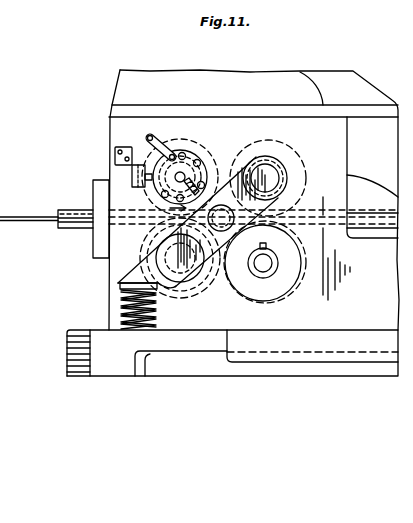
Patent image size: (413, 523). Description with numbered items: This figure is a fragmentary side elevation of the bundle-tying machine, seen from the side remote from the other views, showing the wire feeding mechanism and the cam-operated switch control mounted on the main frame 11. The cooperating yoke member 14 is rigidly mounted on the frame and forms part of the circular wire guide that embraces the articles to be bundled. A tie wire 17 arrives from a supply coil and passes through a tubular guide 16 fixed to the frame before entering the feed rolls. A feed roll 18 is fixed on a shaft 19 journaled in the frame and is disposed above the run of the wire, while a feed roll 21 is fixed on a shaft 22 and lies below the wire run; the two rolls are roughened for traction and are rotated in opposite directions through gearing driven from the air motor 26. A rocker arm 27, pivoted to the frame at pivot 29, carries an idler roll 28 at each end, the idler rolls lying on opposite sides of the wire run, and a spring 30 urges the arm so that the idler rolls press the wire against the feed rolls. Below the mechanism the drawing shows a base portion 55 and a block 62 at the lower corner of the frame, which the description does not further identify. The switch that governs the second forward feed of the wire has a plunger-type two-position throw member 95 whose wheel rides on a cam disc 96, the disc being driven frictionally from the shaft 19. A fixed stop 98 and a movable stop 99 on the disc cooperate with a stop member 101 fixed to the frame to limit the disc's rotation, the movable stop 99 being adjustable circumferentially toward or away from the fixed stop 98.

The main frame 11 is at (344, 142).
The cooperating yoke member 14 is at (323, 82).
The tubular guide 16 is at (72, 211).
The tie wire 17 is at (32, 217).
The feed roll 18 is at (203, 148).
The shaft 19 is at (226, 161).
The feed roll 21 is at (301, 288).
The shaft 22 is at (265, 273).
The air motor 26 is at (114, 166).
The rocker arm 27 is at (209, 255).
The idler roll 28 is at (301, 151).
The pivot 29 is at (246, 231).
The spring 30 is at (119, 306).
The base 55 is at (201, 363).
The block 62 is at (67, 359).
The two-position throw member 95 is at (132, 183).
The cam disc 96 is at (208, 161).
The fixed stop 98 is at (161, 142).
The movable stop 99 is at (165, 190).
The stop member 101 is at (147, 151).